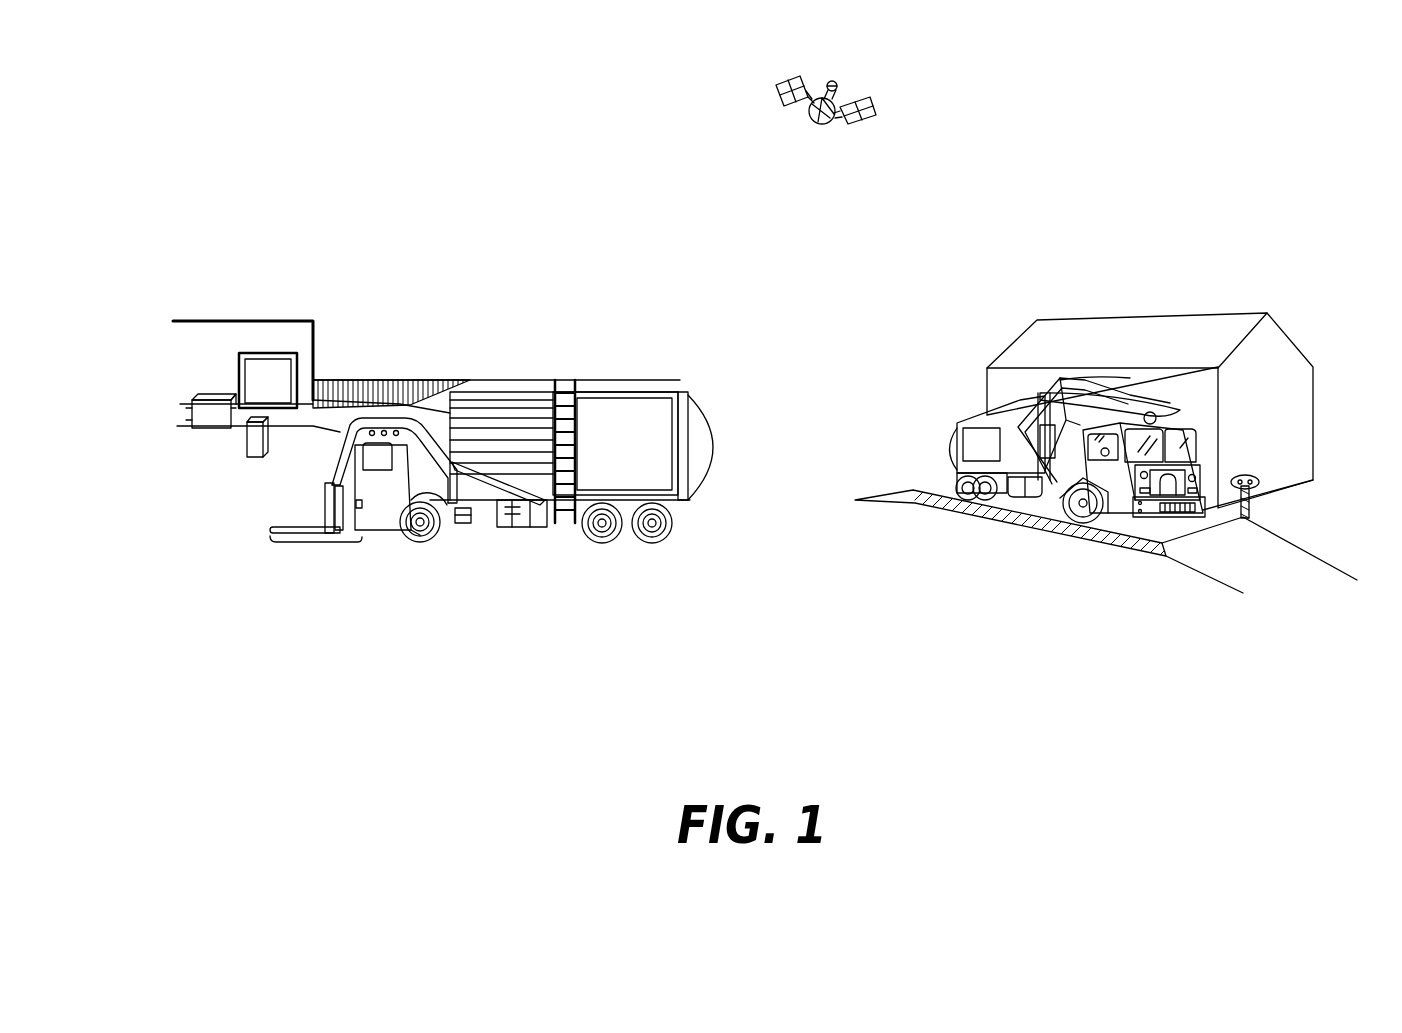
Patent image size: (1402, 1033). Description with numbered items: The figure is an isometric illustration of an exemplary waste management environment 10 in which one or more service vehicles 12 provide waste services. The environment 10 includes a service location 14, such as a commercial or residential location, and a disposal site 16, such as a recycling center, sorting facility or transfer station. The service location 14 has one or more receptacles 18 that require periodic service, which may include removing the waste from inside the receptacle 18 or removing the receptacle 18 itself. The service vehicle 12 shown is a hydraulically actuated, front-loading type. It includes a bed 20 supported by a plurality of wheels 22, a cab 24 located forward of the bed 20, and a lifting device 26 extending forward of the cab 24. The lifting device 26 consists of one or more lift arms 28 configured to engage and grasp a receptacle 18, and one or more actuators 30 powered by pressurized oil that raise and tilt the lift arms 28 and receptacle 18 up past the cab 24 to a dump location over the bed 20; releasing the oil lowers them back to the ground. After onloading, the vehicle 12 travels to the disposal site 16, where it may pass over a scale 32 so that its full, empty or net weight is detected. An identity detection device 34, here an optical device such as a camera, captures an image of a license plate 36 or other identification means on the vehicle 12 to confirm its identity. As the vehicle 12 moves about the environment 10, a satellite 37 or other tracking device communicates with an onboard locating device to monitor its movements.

The waste management environment 10 is at (783, 445).
The service vehicle 12 is at (737, 470).
The service location 14 is at (468, 335).
The disposal site 16 is at (1135, 291).
The receptacle 18 is at (250, 447).
The bed 20 is at (608, 459).
The wheels 22 is at (420, 541).
The cab 24 is at (372, 465).
The lifting device 26 is at (345, 543).
The lift arms 28 is at (340, 465).
The actuators 30 is at (485, 478).
The scale 32 is at (1045, 540).
The identity detection device 34 is at (1259, 483).
The license plate 36 is at (1175, 517).
The satellite 37 is at (808, 112).